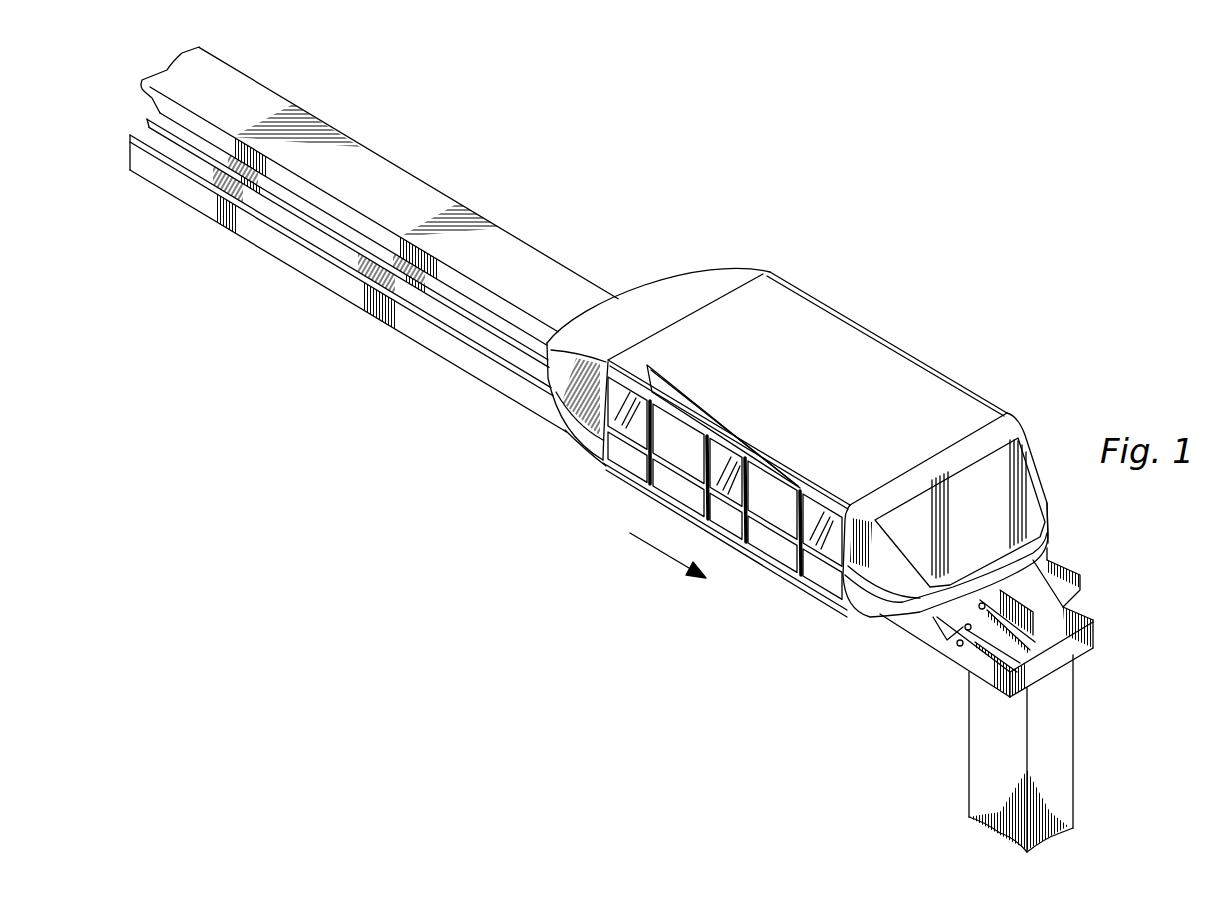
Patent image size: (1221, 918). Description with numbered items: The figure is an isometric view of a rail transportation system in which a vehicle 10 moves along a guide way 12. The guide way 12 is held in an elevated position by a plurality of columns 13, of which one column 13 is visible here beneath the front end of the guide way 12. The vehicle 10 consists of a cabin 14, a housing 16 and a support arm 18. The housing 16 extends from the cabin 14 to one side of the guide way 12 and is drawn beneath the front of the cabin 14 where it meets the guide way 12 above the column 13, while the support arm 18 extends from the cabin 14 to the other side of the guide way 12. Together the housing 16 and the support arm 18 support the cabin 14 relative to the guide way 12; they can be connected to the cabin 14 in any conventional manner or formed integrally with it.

The vehicle 10 is at (849, 270).
The guide way 12 is at (538, 271).
The column 13 is at (1062, 710).
The cabin 14 is at (915, 381).
The housing 16 is at (947, 622).
The support arm 18 is at (1053, 513).